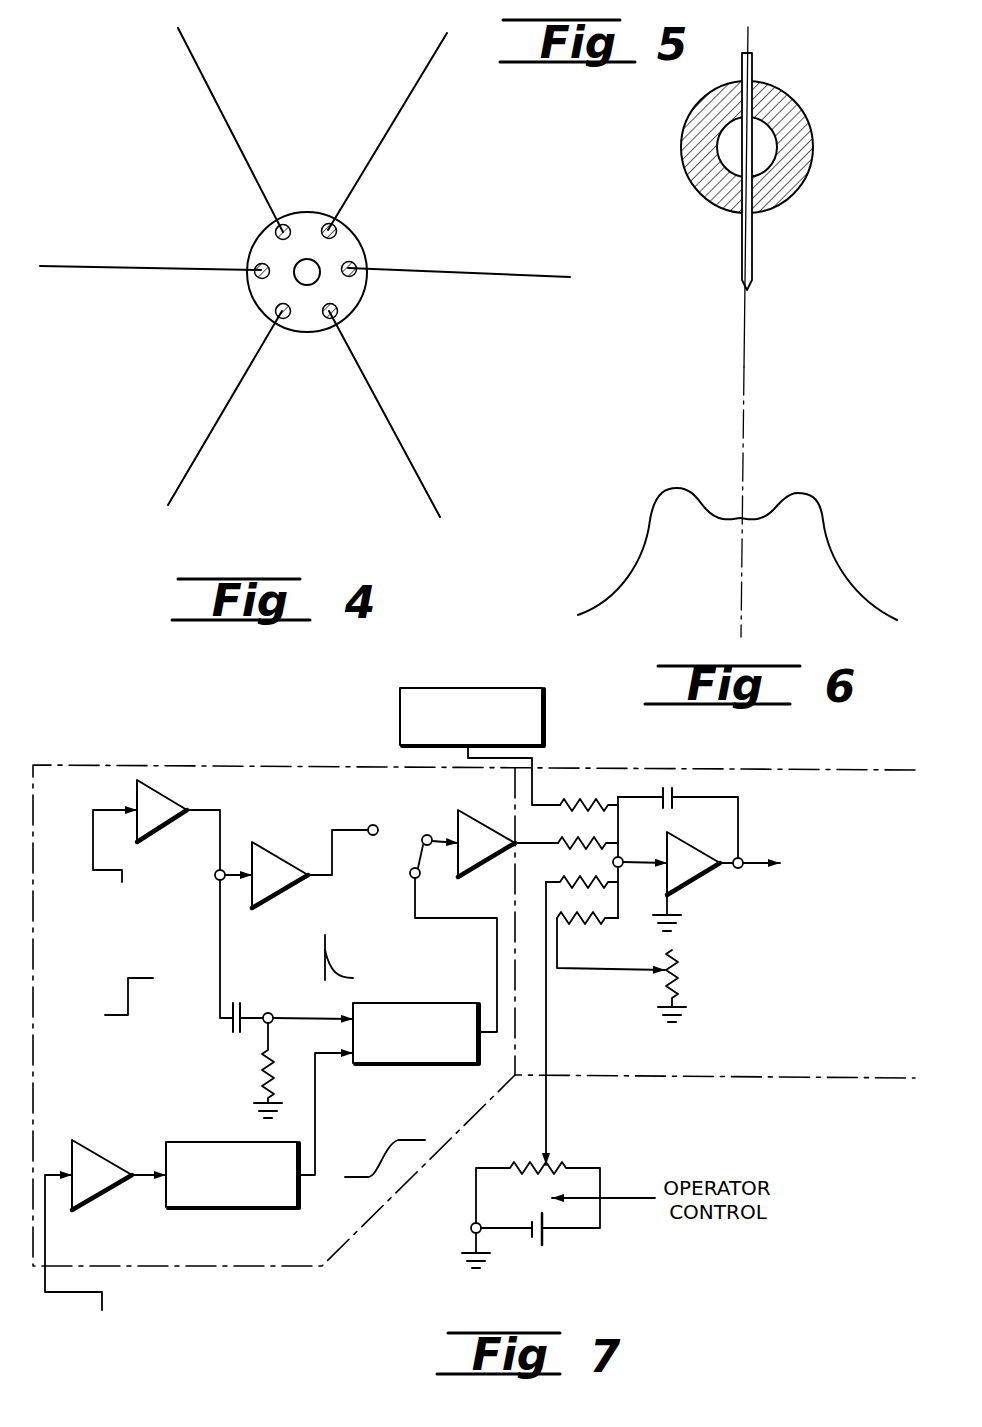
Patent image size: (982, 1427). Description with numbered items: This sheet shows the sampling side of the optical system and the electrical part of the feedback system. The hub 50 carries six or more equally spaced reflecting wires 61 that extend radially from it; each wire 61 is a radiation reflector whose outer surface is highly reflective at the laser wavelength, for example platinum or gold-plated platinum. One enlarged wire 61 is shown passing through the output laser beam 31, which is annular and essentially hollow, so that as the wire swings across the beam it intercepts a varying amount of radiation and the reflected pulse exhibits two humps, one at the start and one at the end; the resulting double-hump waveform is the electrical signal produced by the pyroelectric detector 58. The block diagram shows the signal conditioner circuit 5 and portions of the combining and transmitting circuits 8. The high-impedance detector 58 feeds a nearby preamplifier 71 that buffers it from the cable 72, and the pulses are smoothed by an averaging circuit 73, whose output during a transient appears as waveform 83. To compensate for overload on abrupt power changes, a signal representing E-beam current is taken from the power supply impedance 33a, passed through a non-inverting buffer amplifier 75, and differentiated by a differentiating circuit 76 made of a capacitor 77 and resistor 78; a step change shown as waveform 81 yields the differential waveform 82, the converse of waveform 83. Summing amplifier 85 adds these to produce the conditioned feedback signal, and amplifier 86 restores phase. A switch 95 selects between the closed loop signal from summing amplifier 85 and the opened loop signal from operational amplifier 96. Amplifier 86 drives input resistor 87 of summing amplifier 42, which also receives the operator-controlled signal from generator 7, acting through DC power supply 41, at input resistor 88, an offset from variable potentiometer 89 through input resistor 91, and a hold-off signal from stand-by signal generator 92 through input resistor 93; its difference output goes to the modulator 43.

In FIG. 4, the reflecting wire 61 is at (394, 125).
In FIG. 5, the reflecting wire 61 is at (753, 233).
In FIG. 4, the hub 50 is at (303, 332).
In FIG. 5, the output laser beam 31 is at (813, 155).
In FIG. 7, the stand-by signal generator 92 is at (400, 718).
In FIG. 7, the buffer amplifier 75 is at (180, 790).
In FIG. 7, the power supply impedance 33a is at (131, 920).
In FIG. 7, the operational amplifier 96 is at (300, 838).
In FIG. 7, the switch 95 is at (350, 845).
In FIG. 7, the operational amplifier 86 is at (483, 810).
In FIG. 7, the input resistor 87 is at (560, 838).
In FIG. 7, the input resistor 88 is at (562, 878).
In FIG. 7, the input resistor 93 is at (548, 800).
In FIG. 7, the summing amplifier 42 is at (696, 843).
In FIG. 7, the modulator 43 is at (827, 864).
In FIG. 7, the variable potentiometer 89 is at (678, 950).
In FIG. 7, the input resistor 91 is at (576, 926).
In FIG. 7, the waveform 82 is at (320, 957).
In FIG. 7, the waveform 81 is at (128, 1000).
In FIG. 7, the capacitor 77 is at (242, 1003).
In FIG. 7, the differentiating circuit 76 is at (212, 1047).
In FIG. 7, the resistor 78 is at (262, 1073).
In FIG. 7, the summing amplifier 85 is at (430, 1003).
In FIG. 7, the pyroelectric detector 58 is at (102, 1278).
In FIG. 7, the preamplifier 71 is at (84, 1140).
In FIG. 7, the cable 72 is at (135, 1172).
In FIG. 7, the averaging circuit 73 is at (200, 1142).
In FIG. 7, the waveform 83 is at (378, 1120).
In FIG. 7, the operator-controlled input signal generator 7 is at (604, 1162).
In FIG. 7, the DC power supply 41 is at (545, 1238).
In FIG. 7, the signal conditioner circuit 5 is at (262, 1270).
In FIG. 7, the combining and transmitting circuits 8 is at (770, 1078).